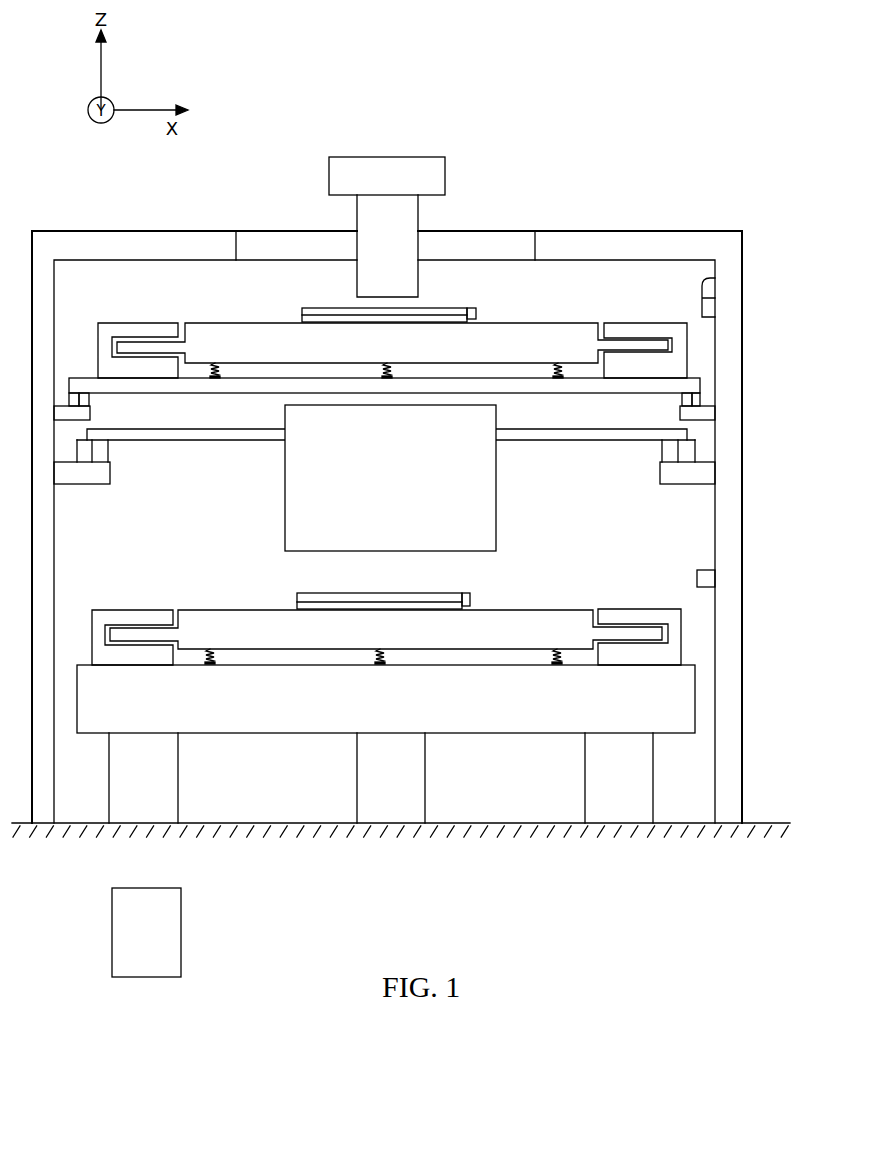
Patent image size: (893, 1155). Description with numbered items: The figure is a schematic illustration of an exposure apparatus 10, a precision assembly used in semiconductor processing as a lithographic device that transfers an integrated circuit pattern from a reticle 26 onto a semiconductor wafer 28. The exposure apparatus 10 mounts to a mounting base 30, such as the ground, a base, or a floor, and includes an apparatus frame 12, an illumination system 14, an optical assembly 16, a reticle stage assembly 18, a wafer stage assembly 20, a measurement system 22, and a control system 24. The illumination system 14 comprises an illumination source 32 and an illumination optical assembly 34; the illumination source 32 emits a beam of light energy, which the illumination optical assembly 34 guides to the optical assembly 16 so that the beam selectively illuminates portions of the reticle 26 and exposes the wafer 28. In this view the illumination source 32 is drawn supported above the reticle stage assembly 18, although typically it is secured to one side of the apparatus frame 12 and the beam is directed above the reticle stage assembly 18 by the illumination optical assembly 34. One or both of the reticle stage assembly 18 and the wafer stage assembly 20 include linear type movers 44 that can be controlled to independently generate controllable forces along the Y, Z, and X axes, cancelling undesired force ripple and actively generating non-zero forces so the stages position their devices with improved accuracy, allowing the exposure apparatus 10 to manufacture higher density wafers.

The exposure apparatus 10 is at (660, 202).
The apparatus frame 12 is at (742, 302).
The illumination system 14 is at (492, 90).
The optical assembly 16 is at (390, 478).
The reticle stage assembly 18 is at (544, 321).
The wafer stage assembly 20 is at (505, 609).
The measurement system 22 is at (705, 278).
The control system 24 is at (146, 932).
The reticle 26 is at (443, 307).
The semiconductor wafer 28 is at (445, 595).
The mounting base 30 is at (572, 833).
The illumination source 32 is at (402, 163).
The illumination optical assembly 34 is at (390, 223).
The linear type mover 44 is at (119, 321).